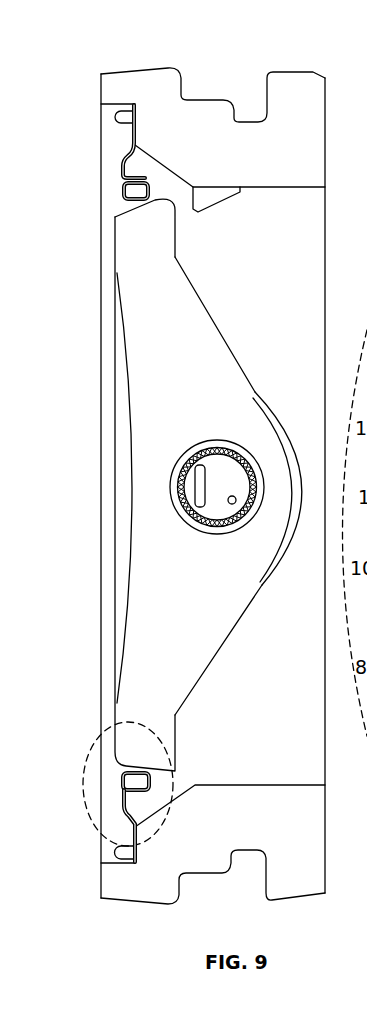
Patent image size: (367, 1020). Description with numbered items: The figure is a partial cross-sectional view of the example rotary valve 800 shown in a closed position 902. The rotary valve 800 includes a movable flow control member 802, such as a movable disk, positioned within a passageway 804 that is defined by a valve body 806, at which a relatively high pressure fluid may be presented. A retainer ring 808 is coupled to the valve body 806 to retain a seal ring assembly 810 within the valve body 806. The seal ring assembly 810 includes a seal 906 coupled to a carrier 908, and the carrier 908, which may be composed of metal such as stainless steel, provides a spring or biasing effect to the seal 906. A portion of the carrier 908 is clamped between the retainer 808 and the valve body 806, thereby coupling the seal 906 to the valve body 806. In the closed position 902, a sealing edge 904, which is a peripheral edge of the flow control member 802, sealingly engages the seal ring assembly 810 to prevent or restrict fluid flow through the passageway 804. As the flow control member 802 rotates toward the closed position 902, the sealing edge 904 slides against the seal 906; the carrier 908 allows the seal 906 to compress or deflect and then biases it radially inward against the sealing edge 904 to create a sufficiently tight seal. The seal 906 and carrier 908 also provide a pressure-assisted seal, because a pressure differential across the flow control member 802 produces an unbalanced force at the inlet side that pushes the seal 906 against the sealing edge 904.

The rotary valve 800 is at (117, 46).
The flow control member 802 is at (210, 371).
The passageway 804 is at (273, 728).
The valve body 806 is at (293, 870).
The retainer ring 808 is at (100, 857).
The seal ring assembly 810 is at (147, 170).
The closed position 902 is at (95, 243).
The sealing edge 904 is at (138, 206).
The seal 906 is at (124, 192).
The carrier 908 is at (120, 164).